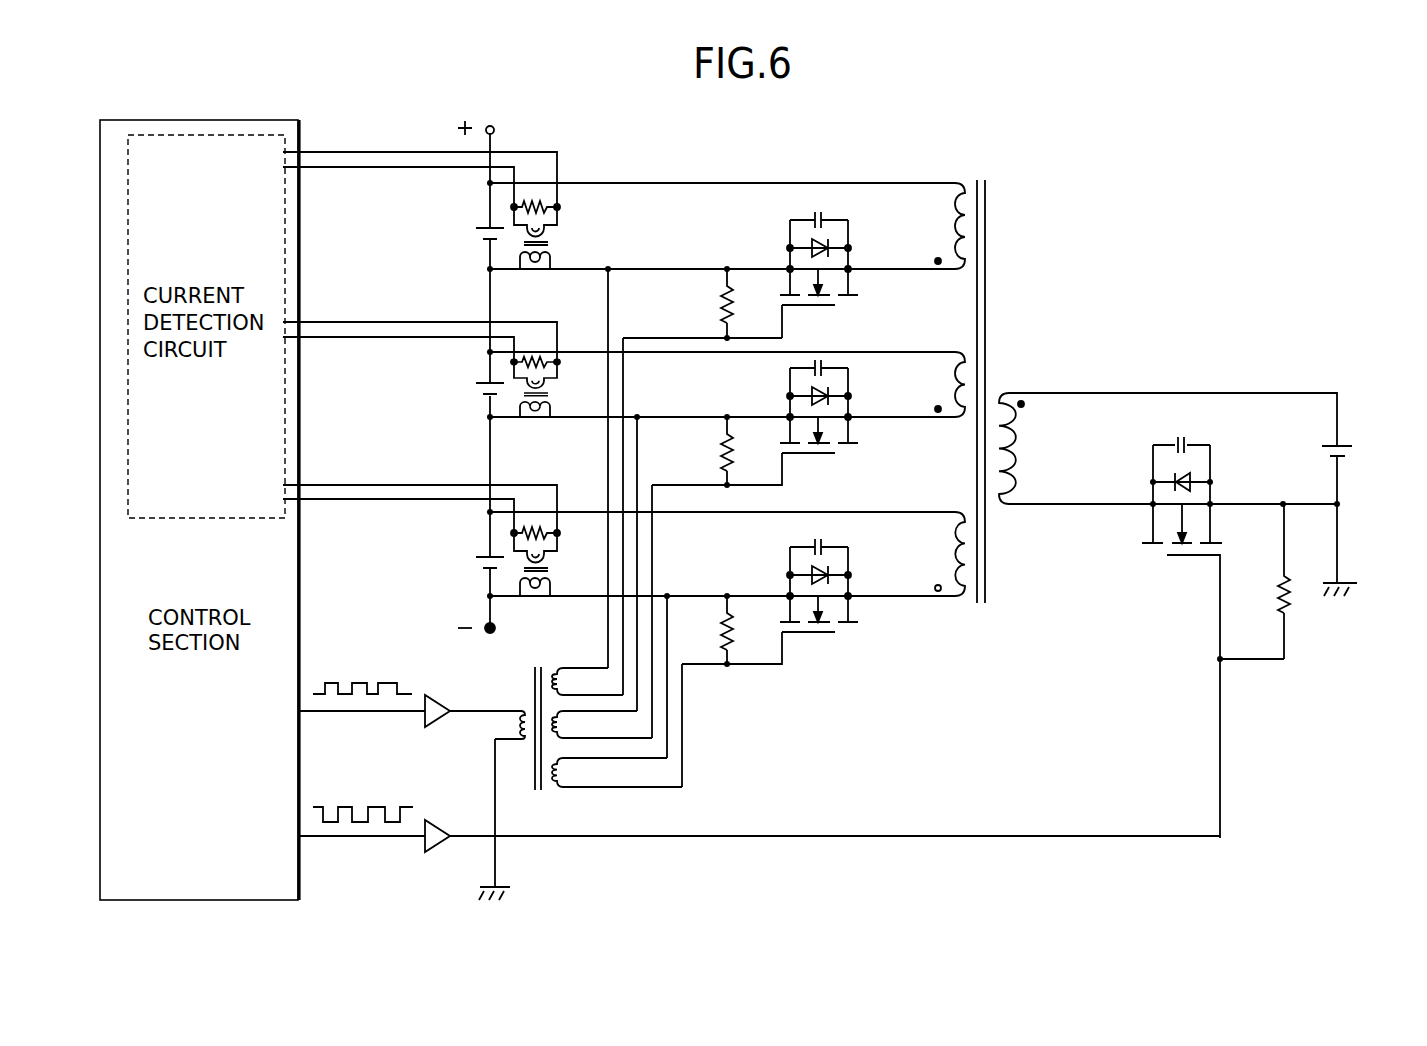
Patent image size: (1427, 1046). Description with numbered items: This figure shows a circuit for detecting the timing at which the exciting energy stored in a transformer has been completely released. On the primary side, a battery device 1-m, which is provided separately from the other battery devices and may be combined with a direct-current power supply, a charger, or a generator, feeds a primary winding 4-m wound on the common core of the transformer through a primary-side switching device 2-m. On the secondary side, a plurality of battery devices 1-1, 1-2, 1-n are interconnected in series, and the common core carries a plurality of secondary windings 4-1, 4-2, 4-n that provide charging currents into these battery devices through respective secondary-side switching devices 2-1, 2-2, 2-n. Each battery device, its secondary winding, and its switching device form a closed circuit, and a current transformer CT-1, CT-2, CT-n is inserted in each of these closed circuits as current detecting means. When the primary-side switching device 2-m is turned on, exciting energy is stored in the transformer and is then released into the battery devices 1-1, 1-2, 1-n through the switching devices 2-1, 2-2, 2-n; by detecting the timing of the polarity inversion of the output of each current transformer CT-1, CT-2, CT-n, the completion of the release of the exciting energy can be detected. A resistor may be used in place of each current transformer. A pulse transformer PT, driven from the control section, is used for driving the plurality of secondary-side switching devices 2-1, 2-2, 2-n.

The battery device 1-1 is at (454, 229).
The battery device 1-2 is at (454, 380).
The battery device 1-n is at (454, 558).
The battery device 1-m is at (1360, 453).
The switching device 2-1 is at (841, 275).
The switching device 2-2 is at (841, 423).
The switching device 2-n is at (841, 602).
The switching device 2-m is at (1188, 637).
The secondary winding 4-1 is at (945, 214).
The secondary winding 4-2 is at (945, 372).
The secondary winding 4-n is at (945, 541).
The primary winding 4-m is at (1025, 436).
The current transformer CT-1 is at (535, 252).
The current transformer CT-2 is at (535, 403).
The current transformer CT-n is at (535, 577).
The pulse transformer PT is at (588, 743).